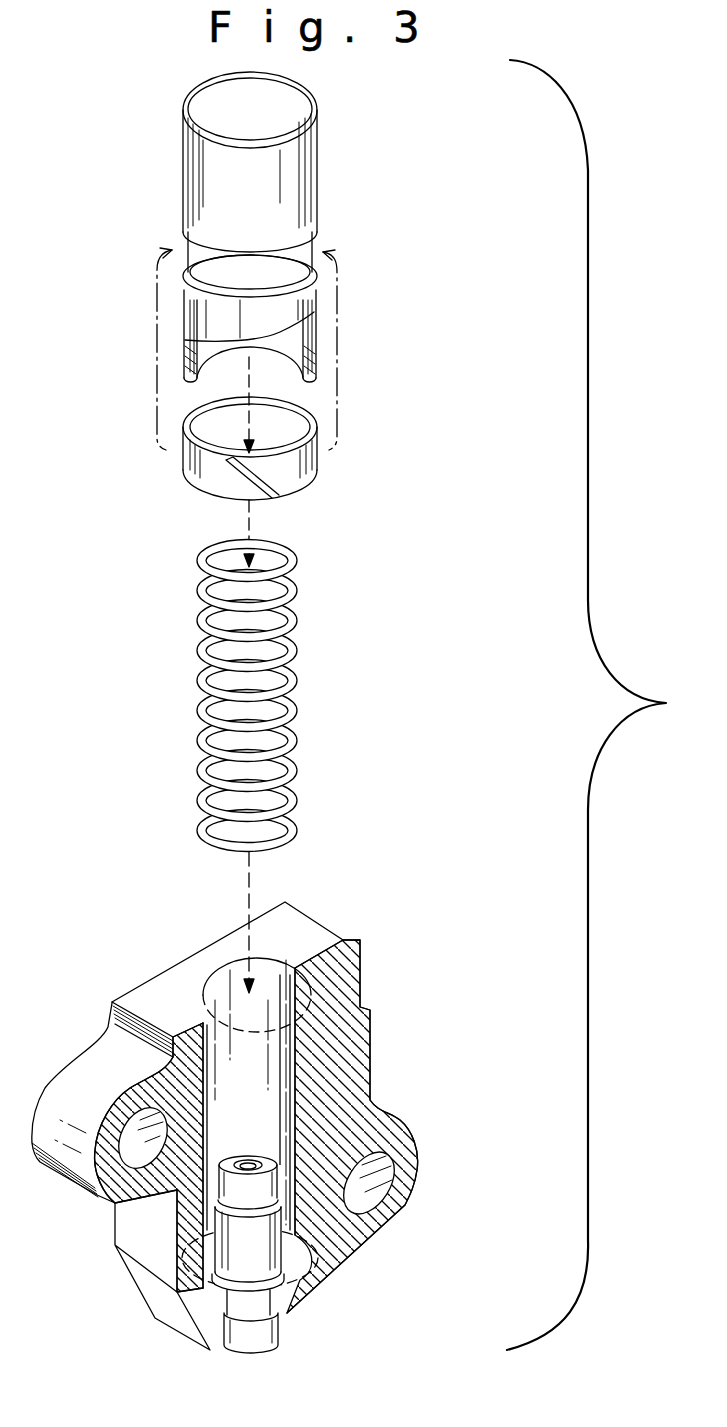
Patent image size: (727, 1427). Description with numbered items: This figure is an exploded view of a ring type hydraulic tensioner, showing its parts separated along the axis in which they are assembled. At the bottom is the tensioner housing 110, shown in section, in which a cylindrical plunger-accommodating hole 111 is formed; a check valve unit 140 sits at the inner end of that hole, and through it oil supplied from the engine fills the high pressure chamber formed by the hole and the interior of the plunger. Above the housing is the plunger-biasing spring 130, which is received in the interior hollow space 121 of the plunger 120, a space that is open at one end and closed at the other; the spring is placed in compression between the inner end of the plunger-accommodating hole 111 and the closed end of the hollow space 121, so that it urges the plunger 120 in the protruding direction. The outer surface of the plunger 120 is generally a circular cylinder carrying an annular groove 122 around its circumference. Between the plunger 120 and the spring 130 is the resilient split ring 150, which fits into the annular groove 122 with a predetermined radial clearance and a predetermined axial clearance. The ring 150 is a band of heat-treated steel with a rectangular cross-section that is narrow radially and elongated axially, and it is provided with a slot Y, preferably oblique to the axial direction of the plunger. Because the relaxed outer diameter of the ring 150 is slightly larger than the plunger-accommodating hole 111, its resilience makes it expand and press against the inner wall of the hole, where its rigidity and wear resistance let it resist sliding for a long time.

The tensioner housing 110 is at (282, 1121).
The plunger-accommodating hole 111 is at (237, 977).
The plunger 120 is at (279, 261).
The interior hollow space 121 is at (215, 357).
The annular groove 122 is at (223, 266).
The plunger-biasing spring 130 is at (332, 677).
The check valve unit 140 is at (248, 1237).
The resilient split ring 150 is at (303, 467).
The slot Y is at (236, 491).